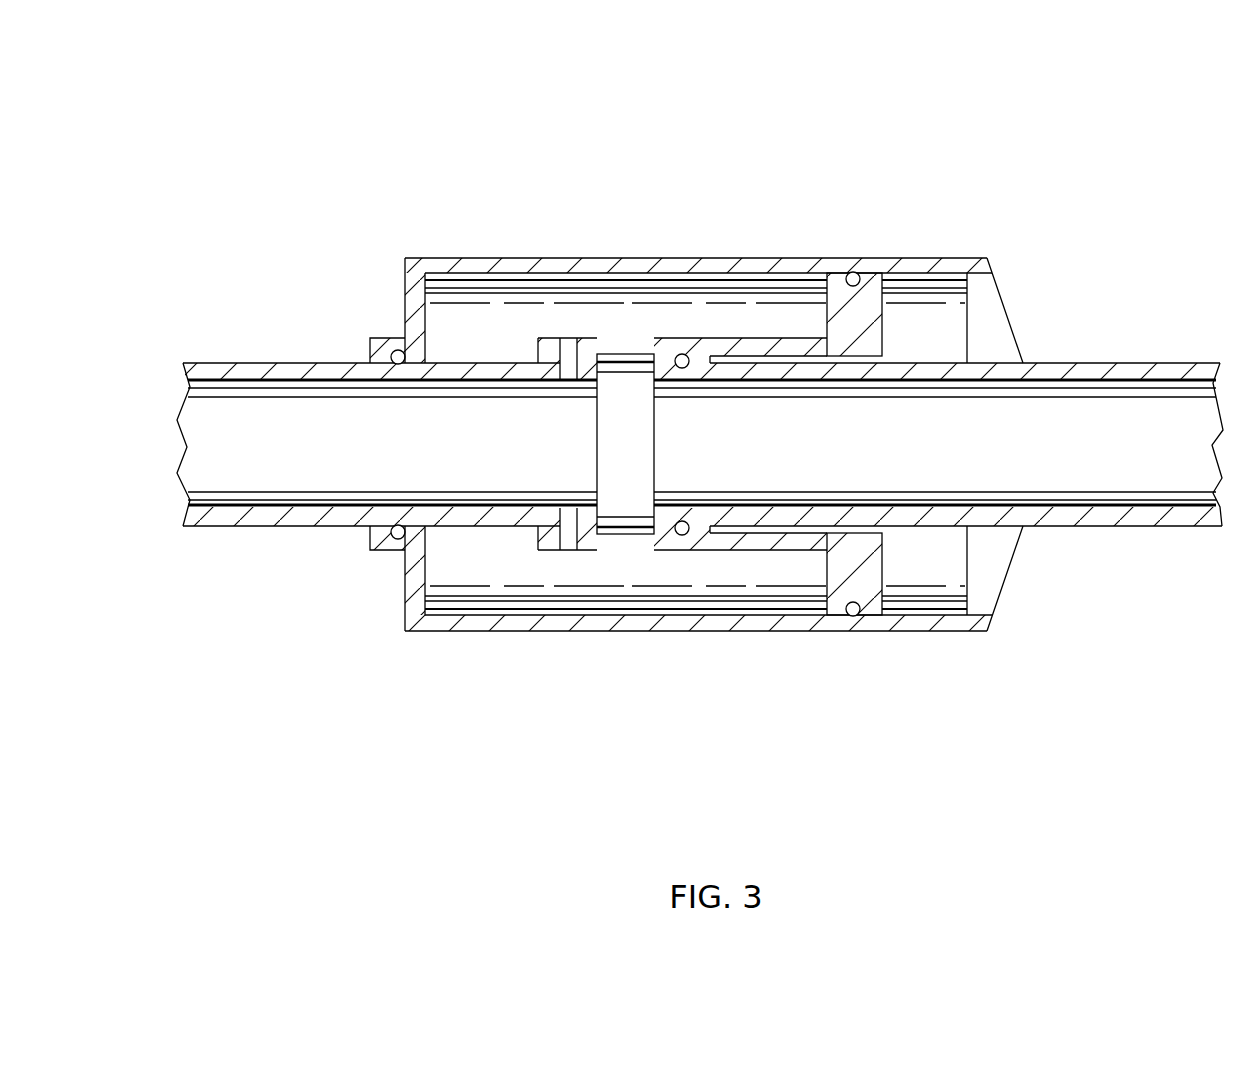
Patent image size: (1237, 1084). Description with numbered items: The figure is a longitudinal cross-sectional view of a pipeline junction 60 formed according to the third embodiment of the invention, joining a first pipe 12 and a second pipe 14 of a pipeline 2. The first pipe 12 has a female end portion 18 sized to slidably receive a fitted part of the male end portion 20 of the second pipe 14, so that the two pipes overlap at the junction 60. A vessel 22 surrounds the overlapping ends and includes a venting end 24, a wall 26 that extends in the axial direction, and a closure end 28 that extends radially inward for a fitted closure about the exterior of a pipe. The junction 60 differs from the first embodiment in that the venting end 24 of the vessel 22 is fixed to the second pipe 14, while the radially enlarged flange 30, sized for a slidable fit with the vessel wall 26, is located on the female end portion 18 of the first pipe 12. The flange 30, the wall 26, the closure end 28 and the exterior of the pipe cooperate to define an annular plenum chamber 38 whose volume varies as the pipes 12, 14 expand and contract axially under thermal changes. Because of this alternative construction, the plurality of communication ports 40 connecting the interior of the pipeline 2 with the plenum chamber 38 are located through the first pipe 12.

The pipeline 2 is at (1073, 540).
The first pipe 12 is at (278, 363).
The second pipe 14 is at (1112, 363).
The female end portion 18 is at (700, 550).
The male end portion 20 is at (737, 358).
The vessel 22 is at (632, 250).
The venting end 24 is at (995, 330).
The wall 26 is at (538, 263).
The closure end 28 is at (410, 303).
The flange 30 is at (885, 575).
The annular plenum chamber 38 is at (492, 333).
The communication ports 40 is at (567, 363).
The junction 60 is at (1068, 143).